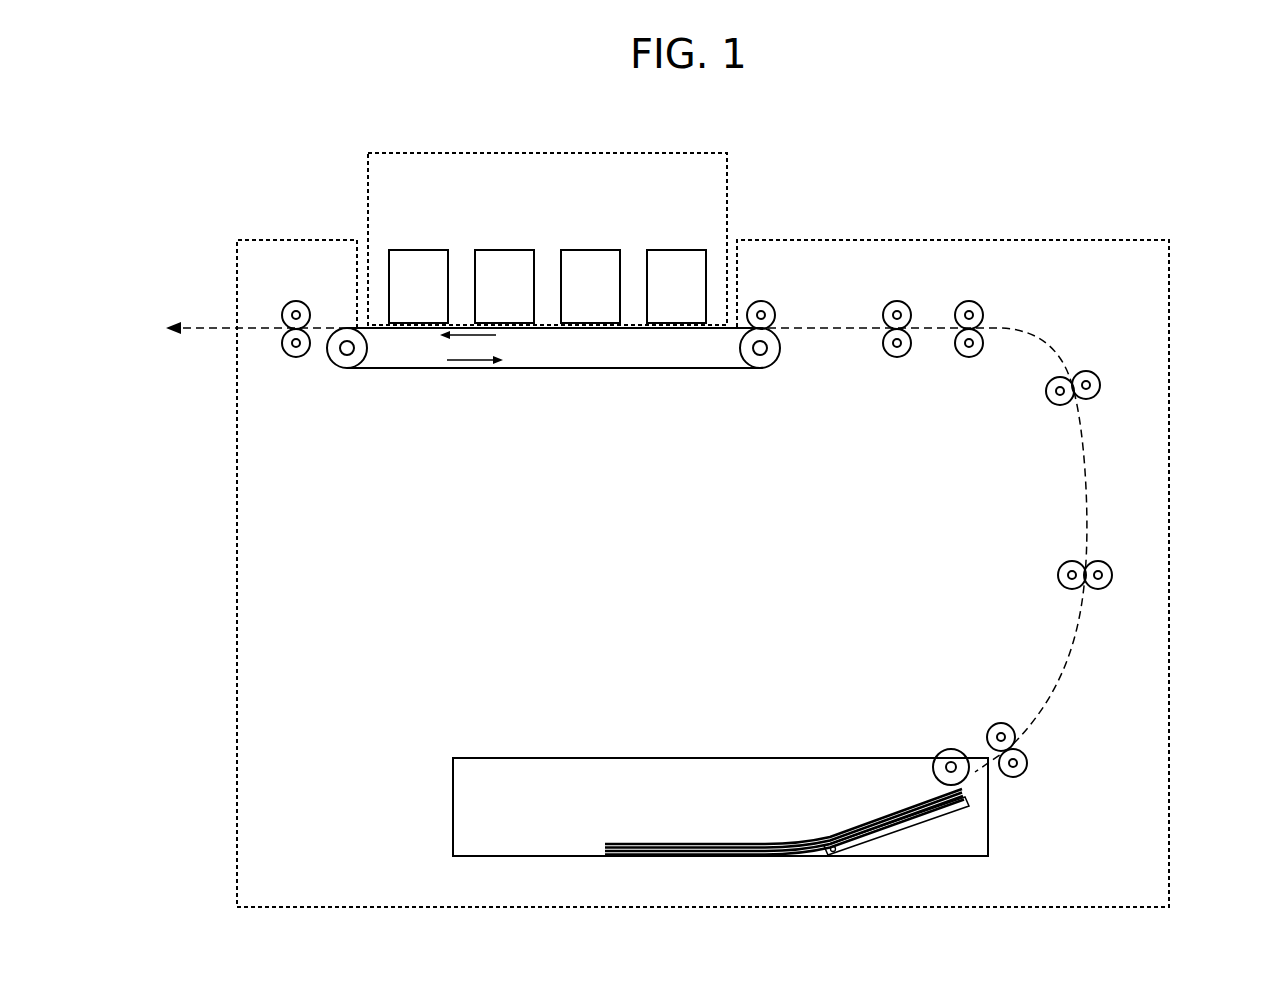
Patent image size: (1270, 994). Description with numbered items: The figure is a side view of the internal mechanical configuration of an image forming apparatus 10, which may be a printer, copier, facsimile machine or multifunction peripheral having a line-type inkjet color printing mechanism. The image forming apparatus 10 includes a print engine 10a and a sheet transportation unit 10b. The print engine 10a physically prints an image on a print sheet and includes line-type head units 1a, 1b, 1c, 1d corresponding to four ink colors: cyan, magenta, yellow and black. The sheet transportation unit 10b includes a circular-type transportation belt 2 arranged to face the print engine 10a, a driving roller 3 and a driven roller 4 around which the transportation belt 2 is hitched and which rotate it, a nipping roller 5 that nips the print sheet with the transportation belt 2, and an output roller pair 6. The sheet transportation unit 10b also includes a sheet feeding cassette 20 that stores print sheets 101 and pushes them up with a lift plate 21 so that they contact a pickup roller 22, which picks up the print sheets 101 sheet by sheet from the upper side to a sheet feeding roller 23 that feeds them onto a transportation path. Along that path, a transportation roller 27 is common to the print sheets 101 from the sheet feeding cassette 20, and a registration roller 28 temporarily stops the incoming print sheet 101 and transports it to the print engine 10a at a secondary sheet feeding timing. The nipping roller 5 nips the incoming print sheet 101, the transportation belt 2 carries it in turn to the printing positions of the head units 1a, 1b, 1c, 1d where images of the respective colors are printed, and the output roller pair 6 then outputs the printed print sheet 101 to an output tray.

The image forming apparatus 10 is at (1041, 151).
The print engine 10a is at (688, 152).
The sheet transportation unit 10b is at (1122, 240).
The line-type head unit 1a is at (680, 249).
The line-type head unit 1b is at (595, 249).
The line-type head unit 1c is at (505, 249).
The line-type head unit 1d is at (425, 249).
The transportation belt 2 is at (590, 369).
The driving roller 3 is at (334, 362).
The driven roller 4 is at (774, 362).
The nipping roller 5 is at (769, 303).
The output roller pair 6 is at (294, 301).
The transportation roller 27 is at (970, 301).
The registration roller 28 is at (898, 301).
The sheet feeding cassette 20 is at (453, 798).
The lift plate 21 is at (857, 843).
The pickup roller 22 is at (948, 753).
The sheet feeding roller 23 is at (988, 736).
The print sheet 101 is at (630, 840).